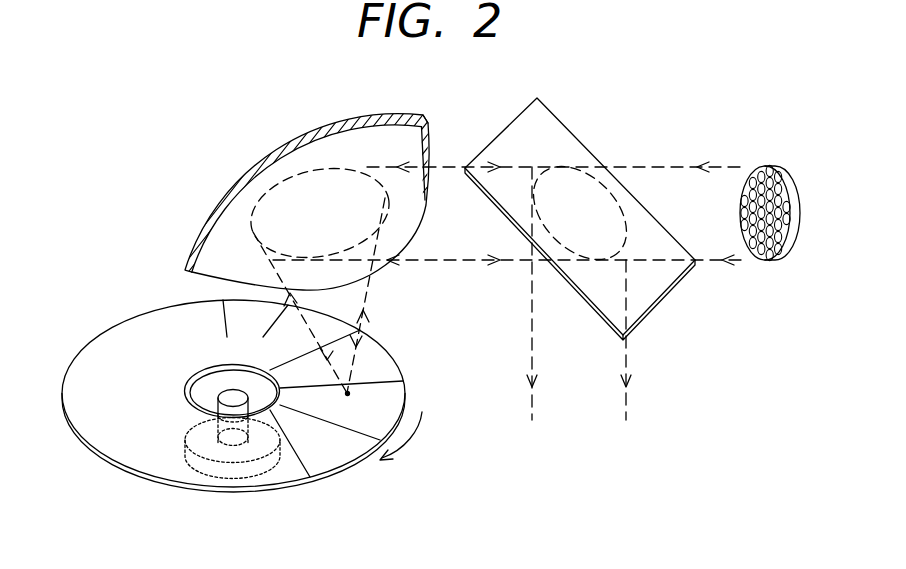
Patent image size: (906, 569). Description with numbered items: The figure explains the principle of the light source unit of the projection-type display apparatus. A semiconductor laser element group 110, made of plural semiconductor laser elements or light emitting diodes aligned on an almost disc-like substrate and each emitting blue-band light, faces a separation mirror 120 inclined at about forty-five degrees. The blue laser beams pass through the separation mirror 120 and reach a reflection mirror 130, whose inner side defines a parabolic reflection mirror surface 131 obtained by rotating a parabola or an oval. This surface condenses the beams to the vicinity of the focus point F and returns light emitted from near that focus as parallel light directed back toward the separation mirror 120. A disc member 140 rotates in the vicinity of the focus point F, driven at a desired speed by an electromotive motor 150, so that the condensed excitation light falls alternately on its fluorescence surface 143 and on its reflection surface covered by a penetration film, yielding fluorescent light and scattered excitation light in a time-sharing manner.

The semiconductor laser element group 110 is at (768, 260).
The separation mirror 120 is at (647, 283).
The reflection mirror 130 is at (300, 148).
The reflection mirror surface 131 is at (230, 223).
The disc member 140 is at (141, 470).
The fluorescence surface 143 is at (320, 455).
The electromotive motor 150 is at (242, 470).
The focus point F is at (349, 394).